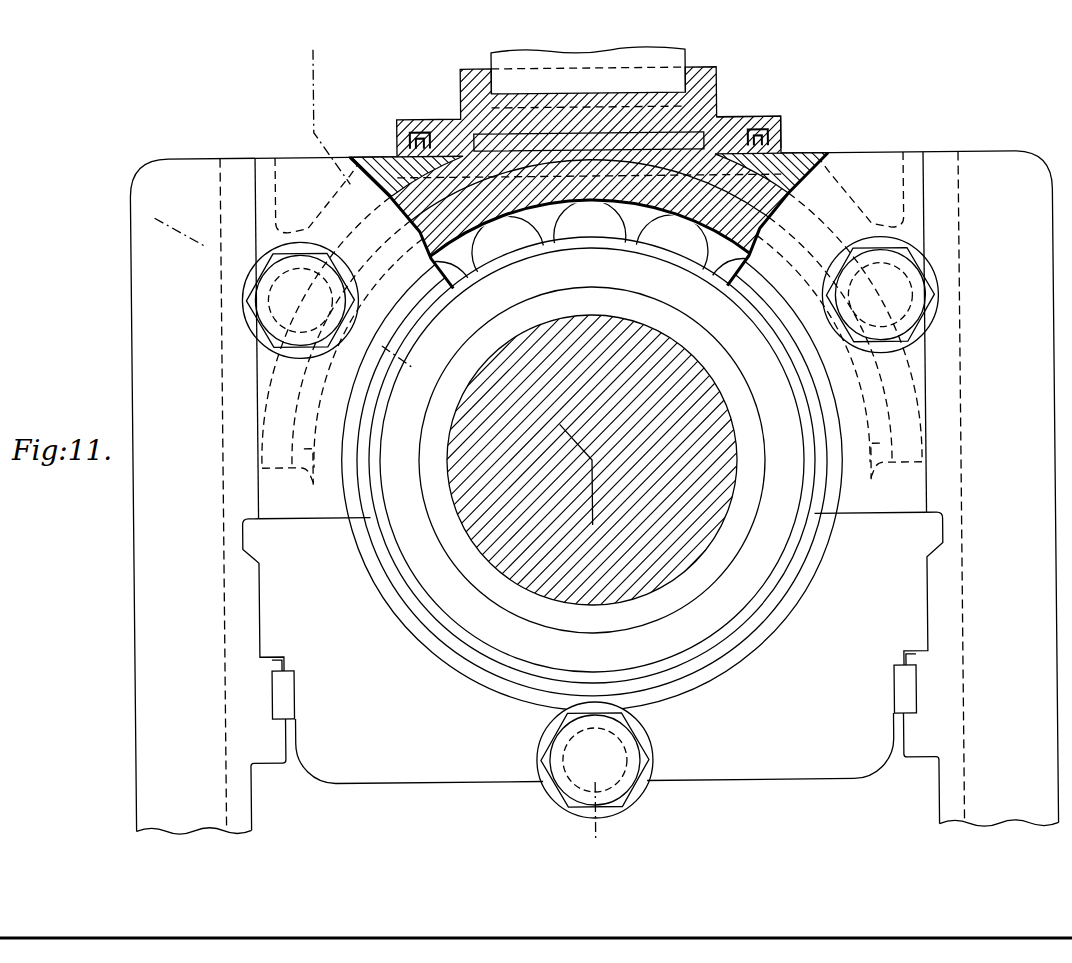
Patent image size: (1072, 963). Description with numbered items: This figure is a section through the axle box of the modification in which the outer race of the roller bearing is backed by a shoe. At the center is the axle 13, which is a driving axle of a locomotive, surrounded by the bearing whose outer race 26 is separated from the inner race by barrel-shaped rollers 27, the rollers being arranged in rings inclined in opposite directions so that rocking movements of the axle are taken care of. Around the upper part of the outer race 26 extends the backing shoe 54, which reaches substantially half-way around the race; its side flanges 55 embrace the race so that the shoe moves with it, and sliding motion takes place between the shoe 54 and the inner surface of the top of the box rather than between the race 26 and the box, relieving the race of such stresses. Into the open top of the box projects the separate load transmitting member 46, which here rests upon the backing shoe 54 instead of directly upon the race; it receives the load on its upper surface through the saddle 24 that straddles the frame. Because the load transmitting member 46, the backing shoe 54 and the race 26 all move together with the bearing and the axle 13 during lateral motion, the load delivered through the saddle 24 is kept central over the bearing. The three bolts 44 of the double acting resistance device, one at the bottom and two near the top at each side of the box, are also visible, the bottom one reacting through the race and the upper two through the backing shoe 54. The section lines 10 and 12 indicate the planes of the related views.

The section line 10- 10 is at (345, 59).
The section line 12- 12 is at (192, 204).
The axle 13 is at (718, 489).
The saddle 24 is at (497, 58).
The outer race 26 is at (587, 186).
The barrel-shaped rollers 27 is at (608, 223).
The bolt 44 is at (263, 302).
The load transmitting member 46 is at (733, 123).
The backing shoe 54 is at (608, 147).
The side flanges 55 is at (592, 511).